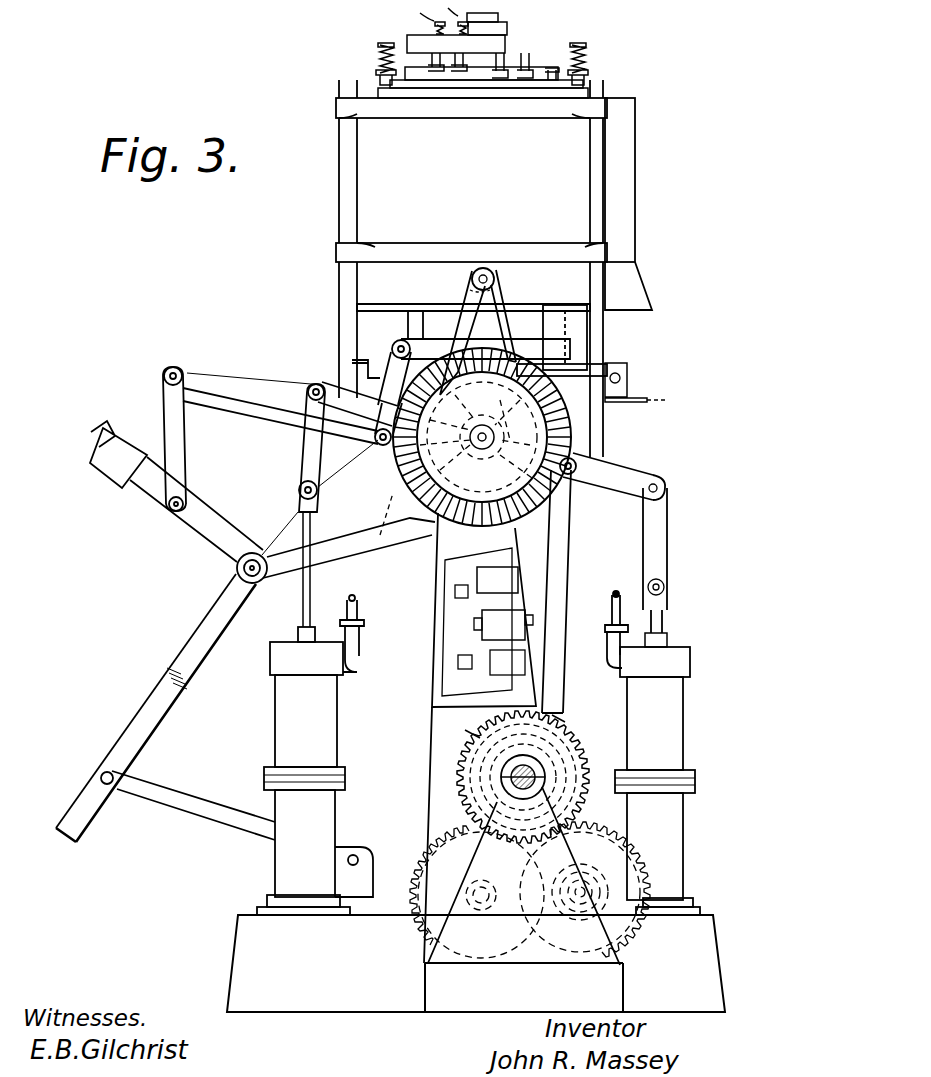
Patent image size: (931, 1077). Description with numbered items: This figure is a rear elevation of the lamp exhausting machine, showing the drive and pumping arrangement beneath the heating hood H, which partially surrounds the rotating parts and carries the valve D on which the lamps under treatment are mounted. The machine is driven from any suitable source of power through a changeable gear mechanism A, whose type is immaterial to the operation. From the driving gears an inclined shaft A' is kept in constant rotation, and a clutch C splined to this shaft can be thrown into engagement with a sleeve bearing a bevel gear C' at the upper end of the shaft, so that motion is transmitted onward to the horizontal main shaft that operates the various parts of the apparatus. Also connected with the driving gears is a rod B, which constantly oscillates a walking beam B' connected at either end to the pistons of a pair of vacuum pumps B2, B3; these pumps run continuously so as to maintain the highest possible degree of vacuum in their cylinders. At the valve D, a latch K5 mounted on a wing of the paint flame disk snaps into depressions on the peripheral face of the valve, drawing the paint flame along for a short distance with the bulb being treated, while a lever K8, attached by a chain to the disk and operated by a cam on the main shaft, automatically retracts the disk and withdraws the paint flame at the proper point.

The heating hood H is at (630, 187).
The lever K8 is at (495, 327).
The valve D is at (570, 372).
The latch K5 is at (623, 375).
The walking beam B' is at (615, 542).
The rod B is at (571, 591).
The bevel gear C' is at (350, 548).
The inclined shaft A' is at (479, 597).
The clutch C is at (489, 632).
The changeable gear mechanism A is at (530, 777).
The vacuum pump B3 is at (315, 755).
The vacuum pump B2 is at (652, 753).